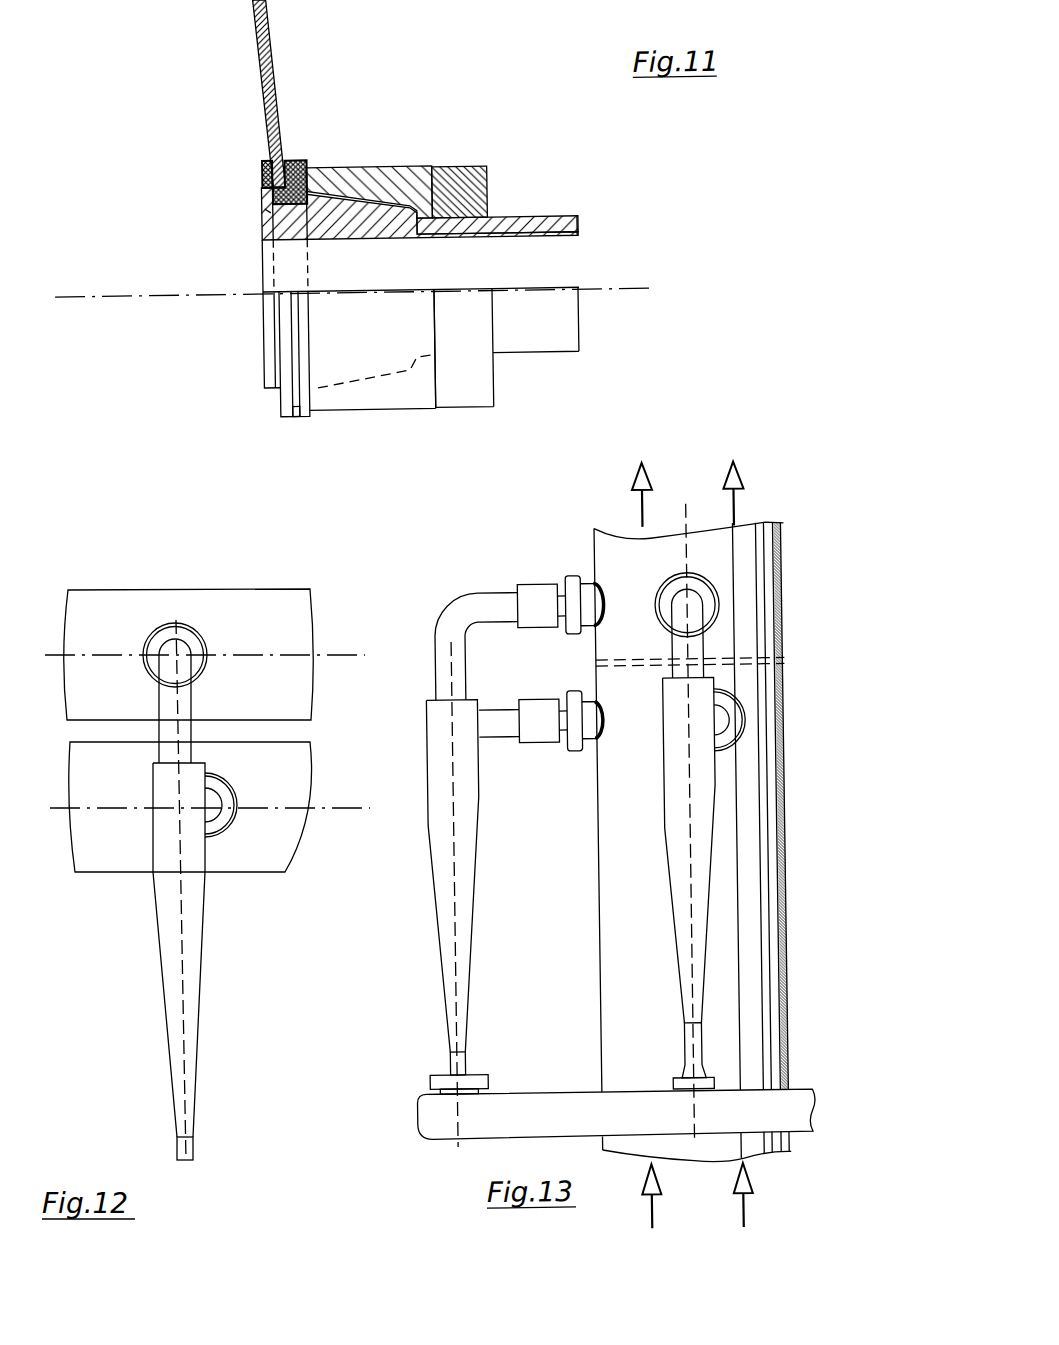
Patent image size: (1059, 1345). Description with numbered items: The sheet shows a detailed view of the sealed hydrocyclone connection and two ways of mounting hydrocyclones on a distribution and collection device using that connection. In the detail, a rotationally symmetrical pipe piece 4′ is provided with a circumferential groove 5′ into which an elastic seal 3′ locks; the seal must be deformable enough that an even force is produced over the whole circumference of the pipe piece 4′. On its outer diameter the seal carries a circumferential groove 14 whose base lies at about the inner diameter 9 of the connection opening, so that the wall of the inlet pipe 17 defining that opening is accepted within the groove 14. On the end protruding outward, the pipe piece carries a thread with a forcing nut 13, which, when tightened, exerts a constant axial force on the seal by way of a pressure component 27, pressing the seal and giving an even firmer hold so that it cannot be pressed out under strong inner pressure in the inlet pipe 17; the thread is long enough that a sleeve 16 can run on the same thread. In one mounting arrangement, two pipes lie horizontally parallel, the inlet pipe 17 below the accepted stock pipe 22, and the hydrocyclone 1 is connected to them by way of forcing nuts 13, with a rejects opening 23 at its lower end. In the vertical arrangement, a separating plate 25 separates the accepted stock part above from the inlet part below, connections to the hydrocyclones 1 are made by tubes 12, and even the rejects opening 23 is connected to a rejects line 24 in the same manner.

In FIG. 12, the hydrocyclone 1 is at (155, 955).
In FIG. 13, the hydrocyclone 1 is at (425, 851).
In FIG. 11, the seal 3′ is at (300, 158).
In FIG. 11, the pipe piece 4′ is at (262, 229).
In FIG. 11, the groove 5′ is at (272, 213).
In FIG. 13, the inner diameter 9 is at (492, 718).
In FIG. 13, the tube 12 is at (687, 1046).
In FIG. 11, the forcing nut 13 is at (489, 171).
In FIG. 12, the forcing nut 13 is at (158, 628).
In FIG. 13, the forcing nut 13 is at (576, 585).
In FIG. 11, the circumferential groove 14 is at (290, 416).
In FIG. 13, the sleeve 16 is at (532, 729).
In FIG. 11, the inlet pipe 17 is at (258, 16).
In FIG. 12, the inlet pipe 17 is at (278, 860).
In FIG. 12, the accepted stock pipe 22 is at (287, 633).
In FIG. 12, the rejects opening 23 is at (182, 1150).
In FIG. 13, the rejects opening 23 is at (447, 1061).
In FIG. 13, the rejects line 24 is at (506, 1119).
In FIG. 13, the separating plate 25 is at (755, 662).
In FIG. 11, the pressure component 27 is at (387, 184).